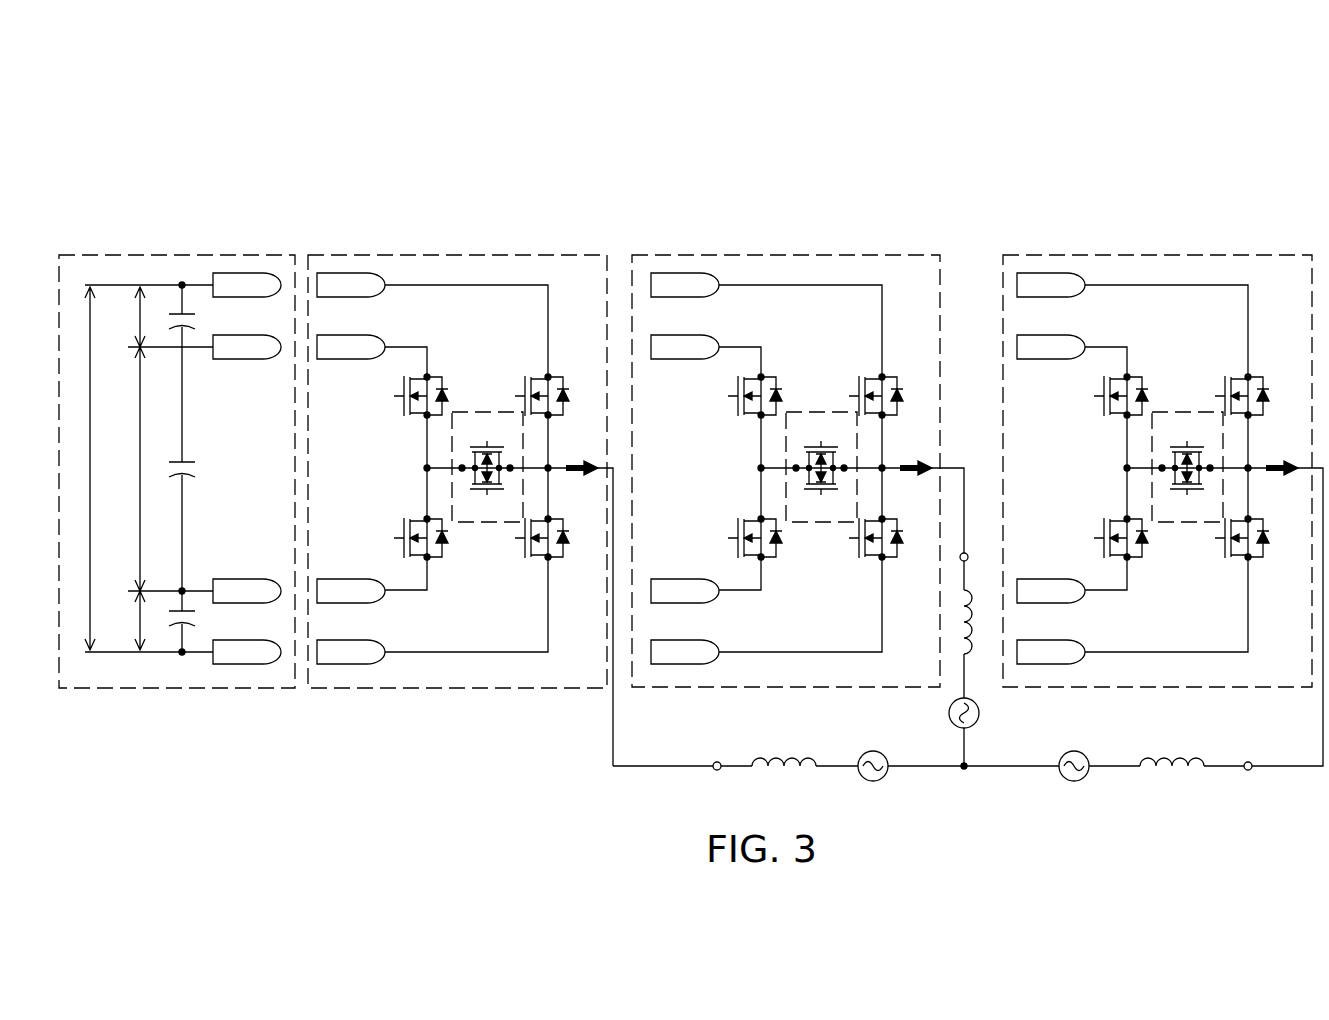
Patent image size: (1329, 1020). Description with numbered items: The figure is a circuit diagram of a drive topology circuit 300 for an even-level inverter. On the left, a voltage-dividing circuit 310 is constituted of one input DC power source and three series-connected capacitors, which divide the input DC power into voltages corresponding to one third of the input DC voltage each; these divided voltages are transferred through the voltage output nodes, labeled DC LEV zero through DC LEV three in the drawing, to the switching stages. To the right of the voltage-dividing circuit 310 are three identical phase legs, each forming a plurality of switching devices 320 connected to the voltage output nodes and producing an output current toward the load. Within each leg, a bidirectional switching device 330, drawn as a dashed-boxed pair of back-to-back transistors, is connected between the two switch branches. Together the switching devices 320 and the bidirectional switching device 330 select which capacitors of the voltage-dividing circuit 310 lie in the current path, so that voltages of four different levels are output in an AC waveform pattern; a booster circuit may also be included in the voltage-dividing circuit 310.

The drive topology circuit 300 is at (1052, 157).
The voltage-dividing circuit 310 is at (188, 255).
The switching devices 320 is at (460, 255).
The bidirectional switching device 330 is at (483, 523).